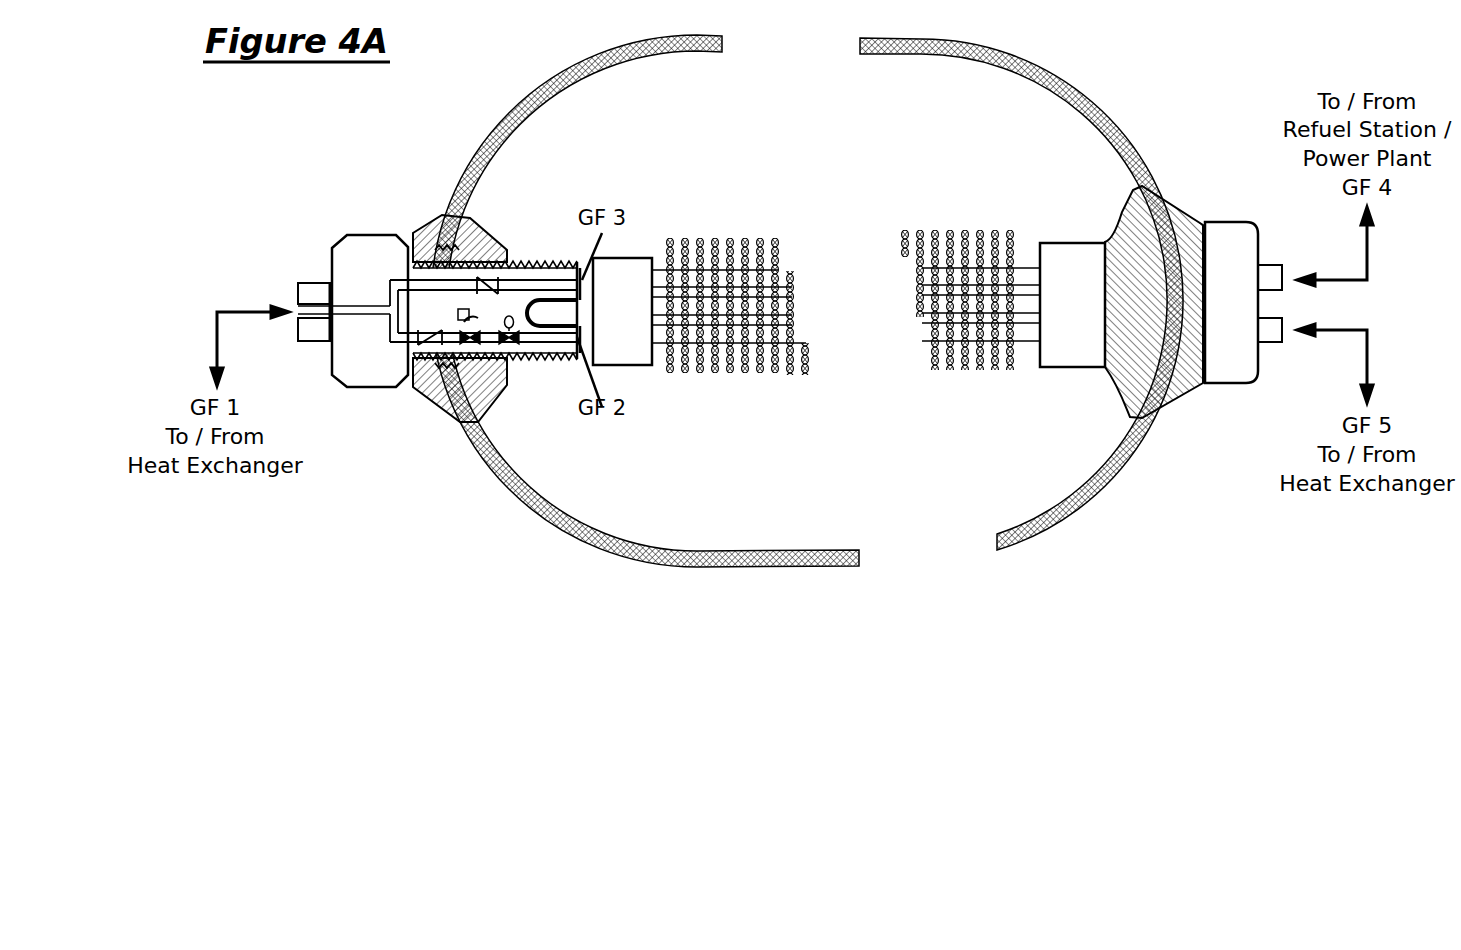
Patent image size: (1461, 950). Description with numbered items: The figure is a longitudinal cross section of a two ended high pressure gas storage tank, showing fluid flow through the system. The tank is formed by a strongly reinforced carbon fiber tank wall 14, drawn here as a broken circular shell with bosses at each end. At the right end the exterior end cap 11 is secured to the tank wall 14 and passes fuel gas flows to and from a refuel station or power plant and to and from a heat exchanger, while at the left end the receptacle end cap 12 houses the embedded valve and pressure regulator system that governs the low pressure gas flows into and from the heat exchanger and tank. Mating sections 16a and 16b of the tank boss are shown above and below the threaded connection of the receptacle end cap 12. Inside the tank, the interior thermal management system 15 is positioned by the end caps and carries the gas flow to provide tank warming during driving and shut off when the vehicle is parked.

The end cap 11 is at (1192, 213).
The receptacle end cap 12 is at (380, 388).
The tank wall 14 is at (667, 563).
The interior thermal management system 15 is at (802, 373).
The mating section of tank boss 16a is at (493, 390).
The mating section of tank boss 16b is at (433, 218).